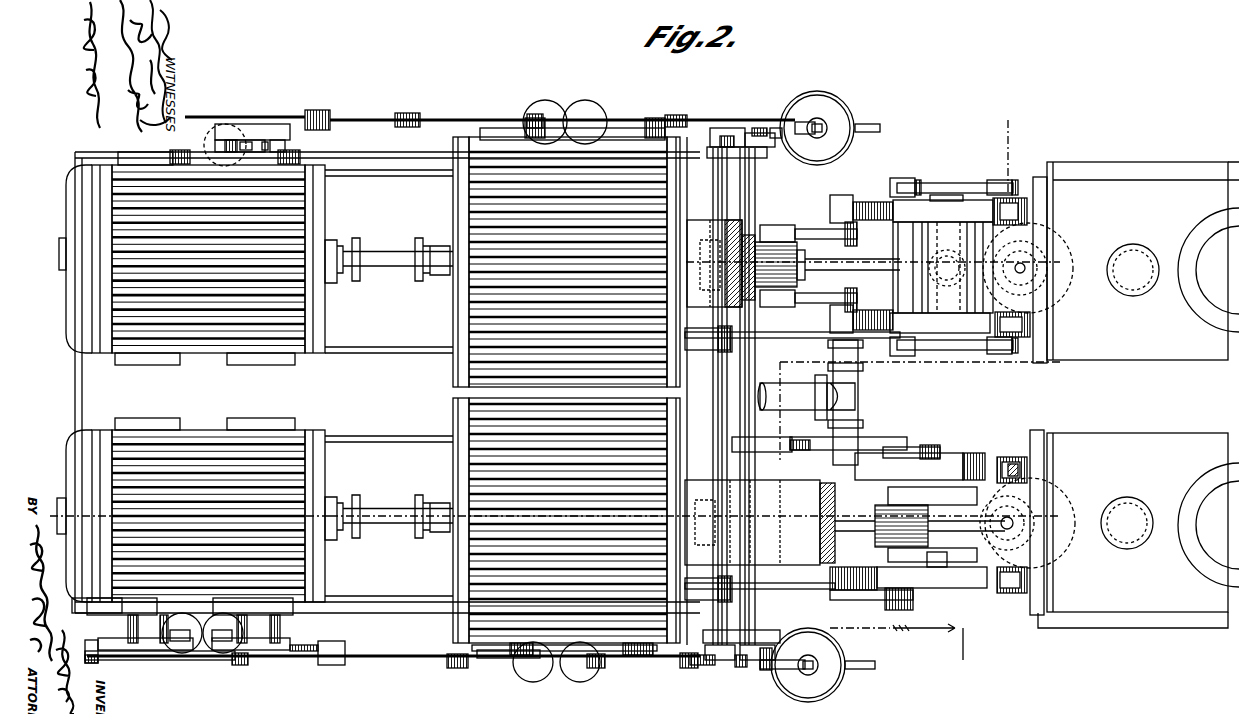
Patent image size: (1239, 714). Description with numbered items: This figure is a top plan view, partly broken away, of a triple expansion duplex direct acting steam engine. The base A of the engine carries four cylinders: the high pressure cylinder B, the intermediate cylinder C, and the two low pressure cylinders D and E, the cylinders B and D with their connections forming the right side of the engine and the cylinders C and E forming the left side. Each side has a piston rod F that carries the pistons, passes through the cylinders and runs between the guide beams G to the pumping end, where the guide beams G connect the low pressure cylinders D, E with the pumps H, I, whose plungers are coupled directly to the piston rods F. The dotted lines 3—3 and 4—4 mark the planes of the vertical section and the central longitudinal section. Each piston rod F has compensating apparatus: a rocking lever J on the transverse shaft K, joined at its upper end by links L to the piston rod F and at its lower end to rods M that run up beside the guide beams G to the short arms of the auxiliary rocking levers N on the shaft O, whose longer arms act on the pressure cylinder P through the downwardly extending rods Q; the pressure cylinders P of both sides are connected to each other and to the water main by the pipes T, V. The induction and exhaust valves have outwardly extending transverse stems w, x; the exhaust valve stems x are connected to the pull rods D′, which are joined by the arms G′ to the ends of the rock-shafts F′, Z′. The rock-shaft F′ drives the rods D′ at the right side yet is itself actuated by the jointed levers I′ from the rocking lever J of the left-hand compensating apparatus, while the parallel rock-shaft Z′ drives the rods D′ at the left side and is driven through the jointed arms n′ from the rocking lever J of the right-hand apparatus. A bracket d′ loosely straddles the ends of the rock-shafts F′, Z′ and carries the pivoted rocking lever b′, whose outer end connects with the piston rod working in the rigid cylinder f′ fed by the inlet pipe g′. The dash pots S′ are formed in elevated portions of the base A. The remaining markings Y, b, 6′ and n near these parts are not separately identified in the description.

The base A is at (387, 391).
The high pressure cylinder B is at (197, 515).
The intermediate cylinder C is at (198, 265).
The low pressure cylinder D is at (558, 520).
The low pressure cylinder E is at (448, 230).
The piston rod F is at (862, 540).
The guide beams G is at (760, 392).
The pump H is at (1138, 530).
The pump I is at (1143, 261).
The rocking lever J is at (860, 205).
The transverse shaft K is at (930, 450).
The links L is at (802, 230).
The rods M is at (980, 182).
The auxiliary rocking levers N is at (935, 394).
The shaft O is at (945, 196).
The pressure cylinder P is at (1048, 280).
The downwardly extending rods Q is at (1012, 206).
The pipe T is at (822, 426).
The pipe V is at (806, 397).
The dotted line 3— 3 is at (920, 394).
The dotted line 4— 4 is at (555, 394).
The dash pots S′ is at (375, 393).
The pull rods D′ is at (441, 396).
The rock-shaft F′ is at (711, 396).
The rock-shaft Z′ is at (755, 396).
The jointed levers I′ is at (776, 330).
The arm G′ is at (702, 673).
The collar Y is at (738, 668).
The pin b is at (764, 668).
The rocking lever b′ is at (738, 128).
The pin 6′ is at (764, 128).
The bracket d′ is at (742, 394).
The rigid cylinder f′ is at (807, 396).
The inlet pipe g′ is at (868, 391).
The bracket n is at (762, 437).
The jointed arms n′ is at (908, 448).
The induction valve stems w is at (203, 392).
The exhaust valve stems x is at (207, 392).